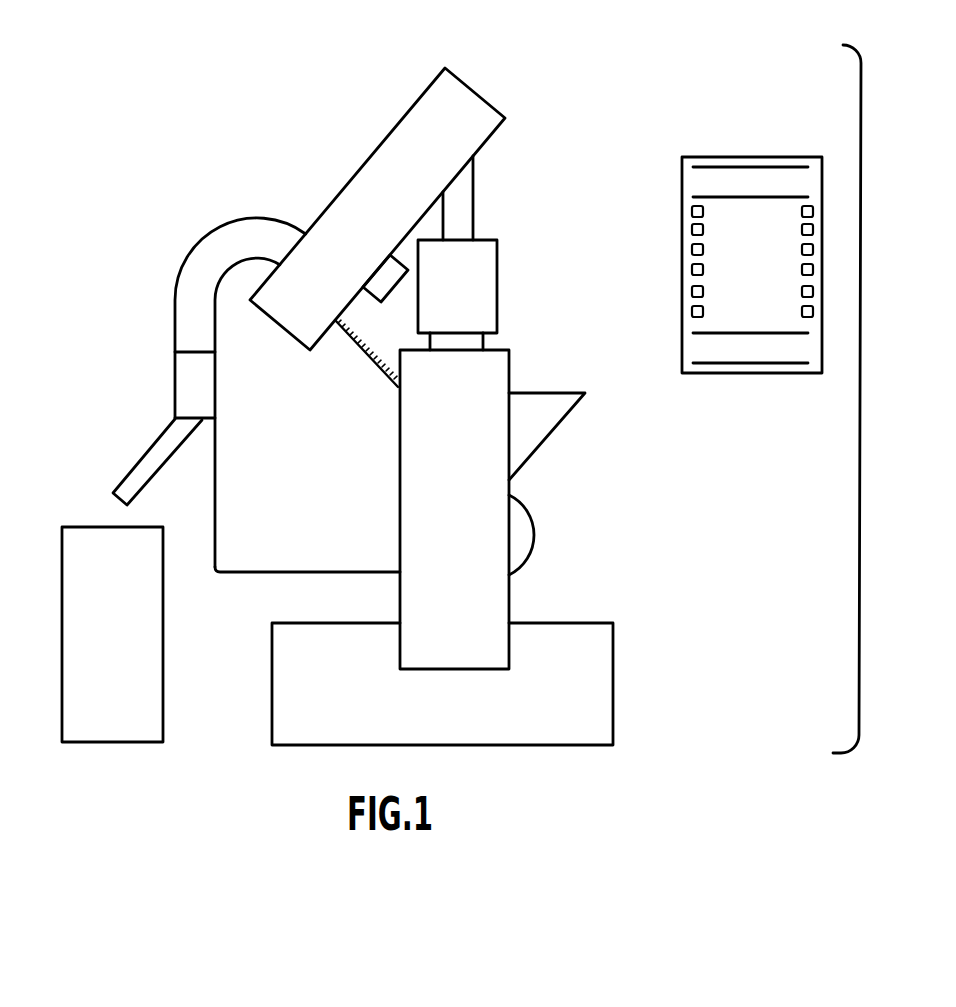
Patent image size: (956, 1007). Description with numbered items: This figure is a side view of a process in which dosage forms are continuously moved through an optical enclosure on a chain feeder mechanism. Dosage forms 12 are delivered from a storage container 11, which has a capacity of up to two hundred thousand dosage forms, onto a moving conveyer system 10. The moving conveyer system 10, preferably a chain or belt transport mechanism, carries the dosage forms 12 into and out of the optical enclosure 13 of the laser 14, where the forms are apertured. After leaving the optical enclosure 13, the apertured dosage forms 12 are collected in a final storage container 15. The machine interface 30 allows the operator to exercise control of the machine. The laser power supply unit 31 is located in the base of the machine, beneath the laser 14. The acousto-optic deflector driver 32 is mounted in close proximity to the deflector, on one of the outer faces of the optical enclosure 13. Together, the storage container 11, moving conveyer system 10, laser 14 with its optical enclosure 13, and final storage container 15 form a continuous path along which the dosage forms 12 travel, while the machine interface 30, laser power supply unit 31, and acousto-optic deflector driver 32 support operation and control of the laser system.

The moving conveyer system 10 is at (348, 527).
The storage container 11 is at (552, 413).
The dosage forms 12 is at (378, 341).
The optical enclosure 13 is at (470, 125).
The laser 14 is at (475, 607).
The final storage container 15 is at (117, 706).
The machine interface 30 is at (772, 306).
The laser power supply unit 31 is at (587, 697).
The acousto-optic deflector driver 32 is at (378, 280).